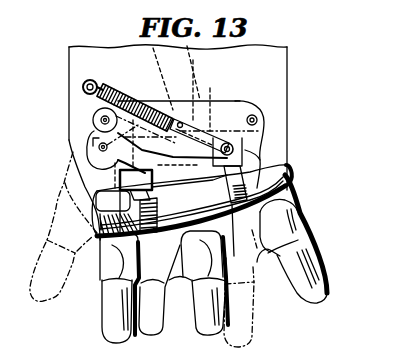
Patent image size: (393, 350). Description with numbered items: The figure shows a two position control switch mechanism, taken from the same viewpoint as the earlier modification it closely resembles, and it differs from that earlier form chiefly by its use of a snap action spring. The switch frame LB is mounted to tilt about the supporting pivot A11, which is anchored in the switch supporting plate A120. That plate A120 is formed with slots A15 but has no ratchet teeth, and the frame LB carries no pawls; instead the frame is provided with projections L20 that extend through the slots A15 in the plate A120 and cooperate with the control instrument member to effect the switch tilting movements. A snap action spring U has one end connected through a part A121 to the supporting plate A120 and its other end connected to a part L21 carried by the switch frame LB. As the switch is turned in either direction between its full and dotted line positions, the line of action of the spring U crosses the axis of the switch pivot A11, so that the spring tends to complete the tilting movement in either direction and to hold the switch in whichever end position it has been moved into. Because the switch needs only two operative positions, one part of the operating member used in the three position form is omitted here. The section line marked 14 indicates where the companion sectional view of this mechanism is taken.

The section line 14- 14 is at (40, 88).
The spring connecting part A121 is at (91, 80).
The snap action spring U is at (125, 98).
The supporting pivot A11 is at (227, 69).
The spring connecting part L21 is at (230, 110).
The switch supporting plate A120 is at (279, 89).
The projections L20 is at (278, 104).
The slots A15 is at (260, 165).
The switch frame LB is at (69, 140).